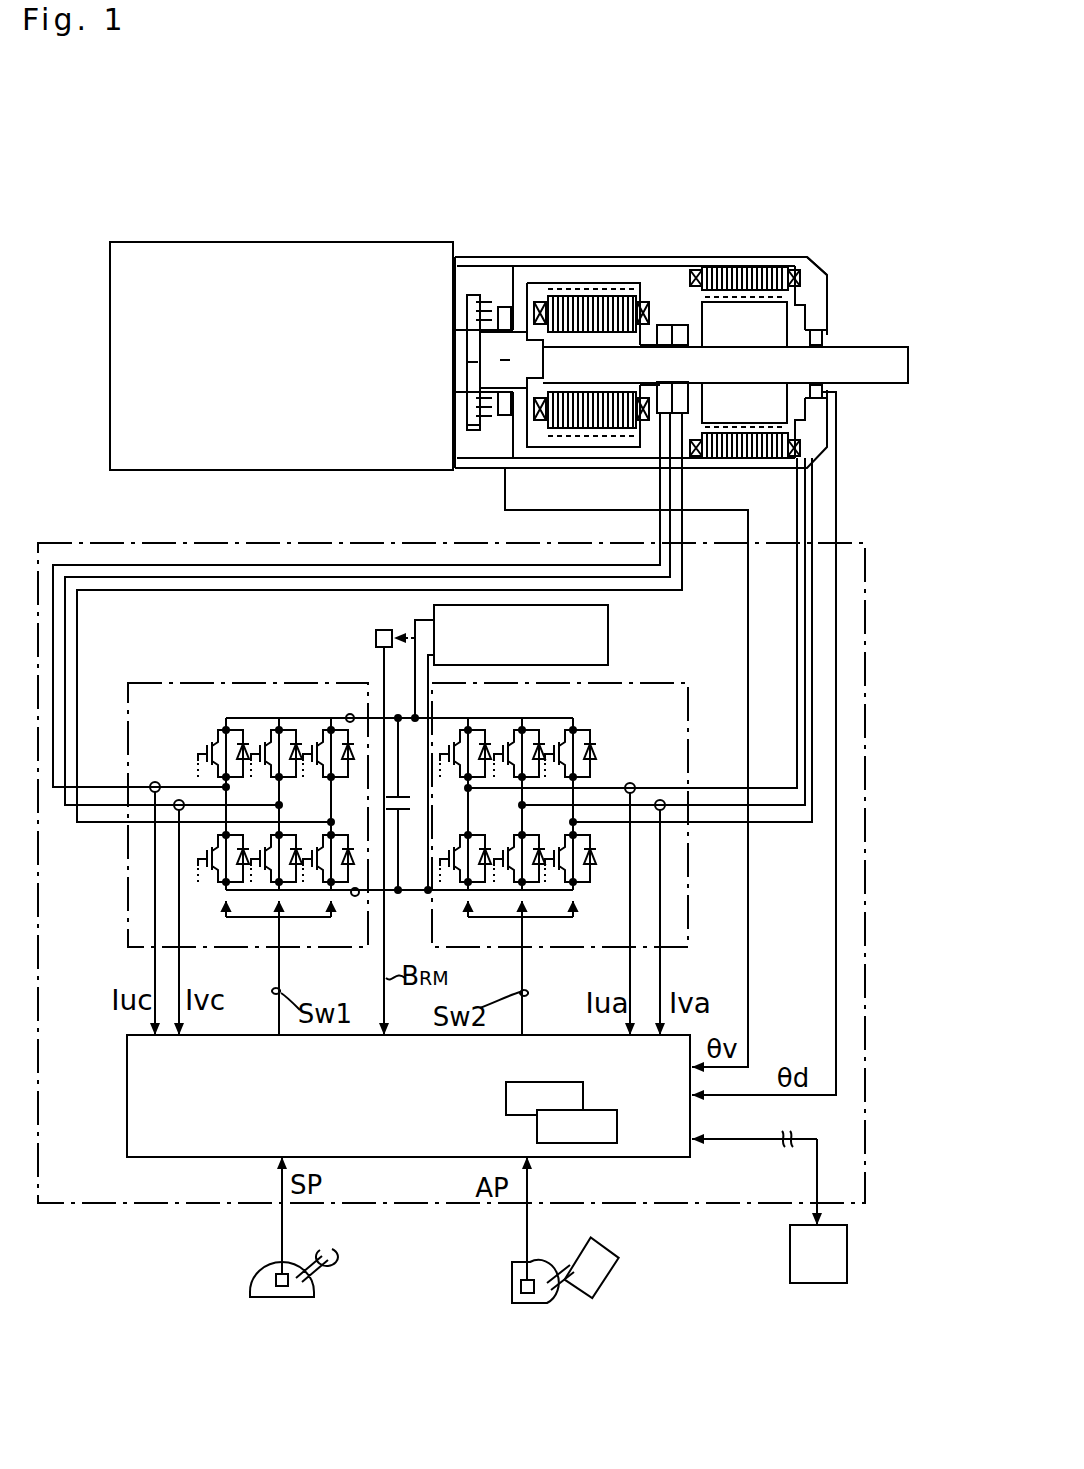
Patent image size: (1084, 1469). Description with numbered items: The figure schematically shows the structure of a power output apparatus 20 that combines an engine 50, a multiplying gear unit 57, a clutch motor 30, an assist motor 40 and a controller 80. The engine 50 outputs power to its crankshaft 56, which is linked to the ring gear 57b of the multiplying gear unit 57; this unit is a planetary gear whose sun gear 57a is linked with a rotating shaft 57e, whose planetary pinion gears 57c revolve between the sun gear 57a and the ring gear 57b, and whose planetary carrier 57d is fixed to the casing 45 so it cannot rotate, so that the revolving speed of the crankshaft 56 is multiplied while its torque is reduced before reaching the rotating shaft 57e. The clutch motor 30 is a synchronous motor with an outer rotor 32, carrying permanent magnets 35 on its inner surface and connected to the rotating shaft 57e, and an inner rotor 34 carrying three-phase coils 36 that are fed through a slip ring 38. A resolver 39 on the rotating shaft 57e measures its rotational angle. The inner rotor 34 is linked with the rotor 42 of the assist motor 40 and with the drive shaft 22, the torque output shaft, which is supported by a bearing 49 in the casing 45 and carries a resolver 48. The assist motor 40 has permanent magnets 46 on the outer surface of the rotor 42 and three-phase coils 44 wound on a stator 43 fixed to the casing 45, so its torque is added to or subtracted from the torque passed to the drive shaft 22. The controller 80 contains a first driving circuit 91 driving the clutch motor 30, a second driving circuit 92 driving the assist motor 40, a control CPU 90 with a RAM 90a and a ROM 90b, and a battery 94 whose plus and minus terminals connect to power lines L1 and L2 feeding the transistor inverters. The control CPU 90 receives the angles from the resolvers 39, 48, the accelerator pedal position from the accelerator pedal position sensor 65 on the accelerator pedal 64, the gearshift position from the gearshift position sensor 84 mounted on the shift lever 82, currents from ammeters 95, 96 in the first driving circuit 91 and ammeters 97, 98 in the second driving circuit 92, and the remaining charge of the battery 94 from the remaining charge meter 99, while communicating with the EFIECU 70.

The power output apparatus 20 is at (684, 190).
The drive shaft 22 is at (874, 383).
The clutch motor 30 is at (527, 236).
The outer rotor 32 is at (533, 283).
The inner rotor 34 is at (600, 300).
The permanent magnets 35 is at (583, 288).
The three-phase coils 36 is at (646, 300).
The slip ring 38 is at (668, 324).
The resolver 39 is at (505, 305).
The assist motor 40 is at (803, 240).
The rotor 42 is at (762, 325).
The stator 43 is at (754, 297).
The three-phase coils 44 is at (797, 272).
The casing 45 is at (817, 262).
The permanent magnets 46 is at (737, 287).
The resolver 48 is at (822, 333).
The bearing 49 is at (837, 360).
The engine 50 is at (298, 242).
The crankshaft 56 is at (467, 300).
The multiplying gear unit 57 is at (476, 288).
The sun gear 57a is at (474, 372).
The ring gear 57b is at (500, 418).
The planetary pinion gears 57c is at (473, 426).
The planetary carrier 57d is at (507, 440).
The rotating shaft 57e is at (500, 362).
The accelerator pedal 64 is at (575, 1292).
The accelerator pedal position sensor 65 is at (527, 1305).
The EFIECU 70 is at (790, 1250).
The controller 80 is at (206, 543).
The shift lever 82 is at (318, 1296).
The gearshift position sensor 84 is at (281, 1273).
The control CPU 90 is at (405, 1157).
The RAM 90a is at (583, 1096).
The ROM 90b is at (578, 1143).
The first driving circuit 91 is at (186, 683).
The second driving circuit 92 is at (700, 706).
The battery 94 is at (608, 634).
The ammeter 95 is at (153, 784).
The ammeter 96 is at (178, 800).
The ammeter 97 is at (633, 786).
The ammeter 98 is at (663, 808).
The remaining charge meter 99 is at (376, 638).
The power line L1 is at (350, 714).
The power line L2 is at (355, 897).